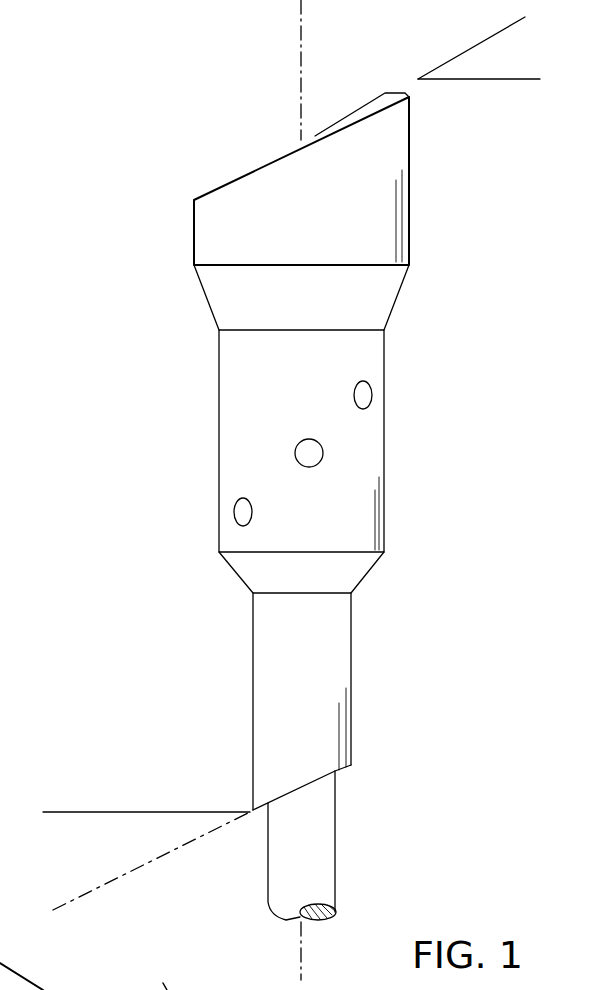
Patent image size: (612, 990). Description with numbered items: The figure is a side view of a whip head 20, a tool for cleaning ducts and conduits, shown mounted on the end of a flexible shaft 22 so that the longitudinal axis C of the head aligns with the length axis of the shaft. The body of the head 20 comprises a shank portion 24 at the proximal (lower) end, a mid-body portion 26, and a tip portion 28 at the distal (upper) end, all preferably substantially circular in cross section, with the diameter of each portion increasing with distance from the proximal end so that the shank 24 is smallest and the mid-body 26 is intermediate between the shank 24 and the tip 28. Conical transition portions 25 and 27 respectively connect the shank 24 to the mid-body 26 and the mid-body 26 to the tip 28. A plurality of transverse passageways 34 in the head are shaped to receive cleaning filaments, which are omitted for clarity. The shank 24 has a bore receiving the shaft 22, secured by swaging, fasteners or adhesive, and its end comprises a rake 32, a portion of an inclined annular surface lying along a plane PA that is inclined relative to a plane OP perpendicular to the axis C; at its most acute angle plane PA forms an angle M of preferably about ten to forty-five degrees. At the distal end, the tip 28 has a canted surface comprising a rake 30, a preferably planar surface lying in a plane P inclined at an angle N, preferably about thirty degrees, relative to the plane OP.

The whip head 20 is at (190, 683).
The flexible shaft 22 is at (325, 864).
The shank portion 24 is at (352, 657).
The conical transition portion 25 is at (233, 577).
The mid-body portion 26 is at (228, 392).
The conical transition portion 27 is at (380, 297).
The tip portion 28 is at (386, 232).
The rake 30 is at (258, 169).
The rake 32 is at (337, 773).
The transverse passageways 34 is at (372, 397).
The longitudinal axis C is at (302, 32).
The plane perpendicular to longitudinal axis OP is at (498, 84).
The plane of rake 30 P is at (475, 44).
The angle N is at (528, 25).
The angle M is at (52, 816).
The plane of rake 32 PA is at (122, 877).